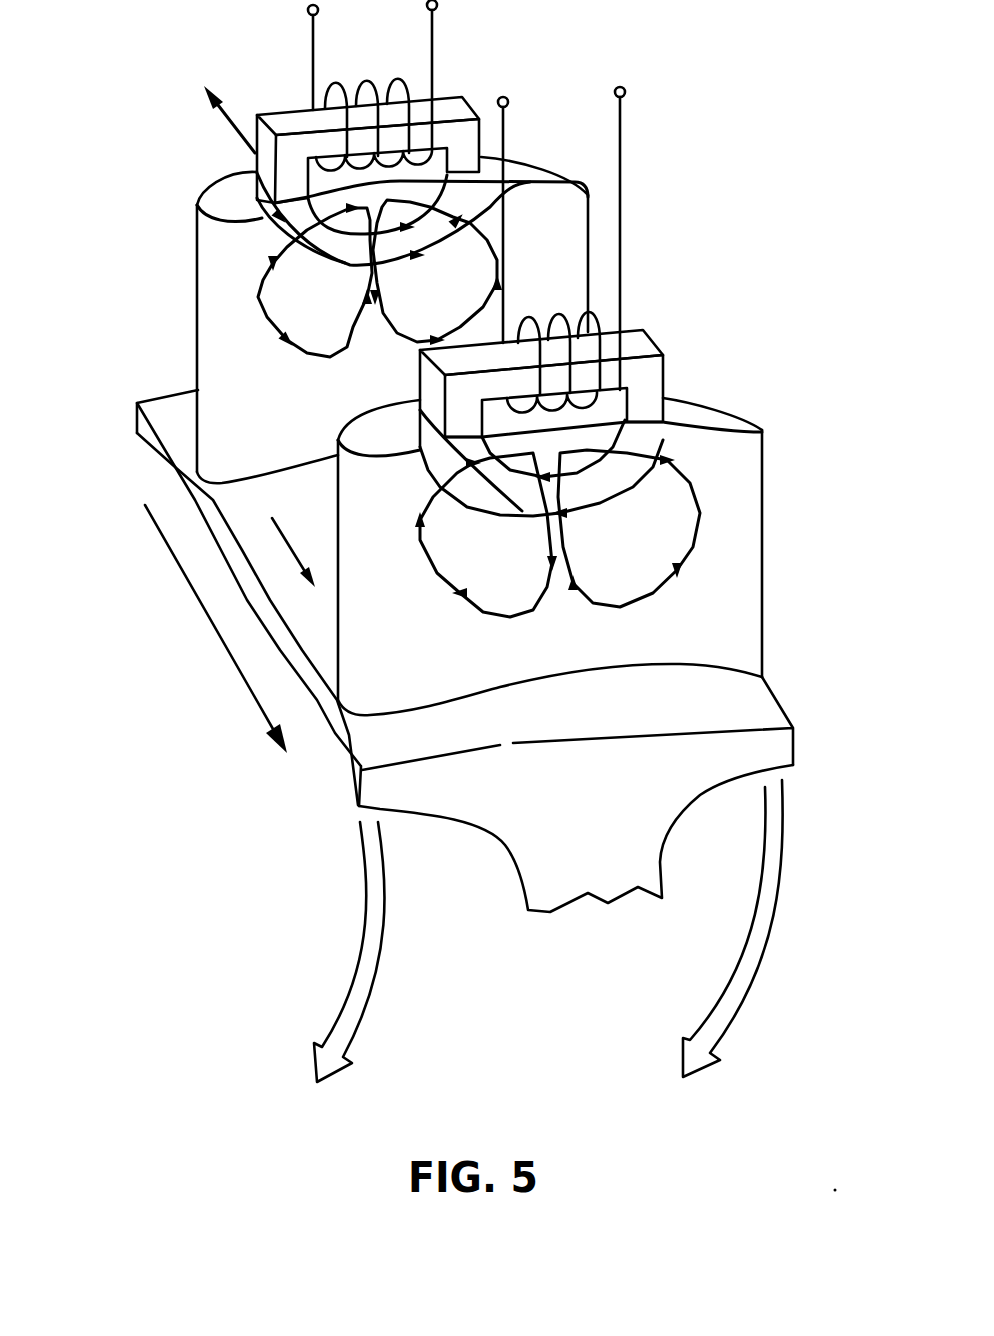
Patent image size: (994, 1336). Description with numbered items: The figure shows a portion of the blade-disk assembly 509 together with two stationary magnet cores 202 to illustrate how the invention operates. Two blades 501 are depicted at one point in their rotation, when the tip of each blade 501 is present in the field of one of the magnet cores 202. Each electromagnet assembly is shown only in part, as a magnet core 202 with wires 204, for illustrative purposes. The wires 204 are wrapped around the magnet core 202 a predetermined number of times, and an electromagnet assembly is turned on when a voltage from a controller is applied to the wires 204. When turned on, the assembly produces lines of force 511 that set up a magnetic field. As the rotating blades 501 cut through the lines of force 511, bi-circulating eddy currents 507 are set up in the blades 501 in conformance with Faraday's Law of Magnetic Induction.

The magnet core 202 is at (458, 107).
The wires 204 is at (310, 34).
The blades 501 is at (567, 260).
The bi-circulating eddy currents 507 is at (257, 308).
The blade-disk assembly 509 is at (243, 498).
The lines of force 511 is at (252, 197).